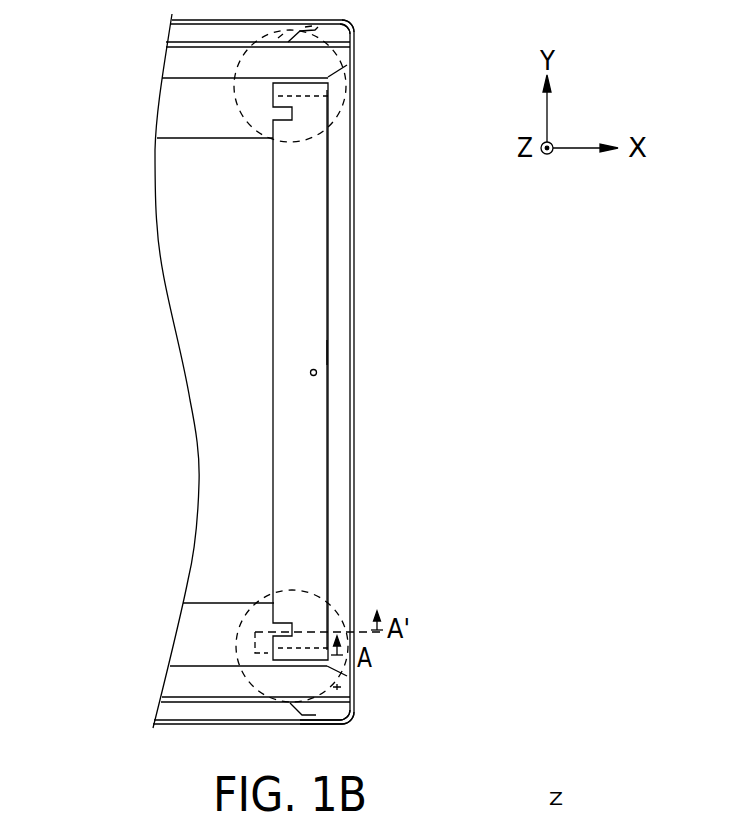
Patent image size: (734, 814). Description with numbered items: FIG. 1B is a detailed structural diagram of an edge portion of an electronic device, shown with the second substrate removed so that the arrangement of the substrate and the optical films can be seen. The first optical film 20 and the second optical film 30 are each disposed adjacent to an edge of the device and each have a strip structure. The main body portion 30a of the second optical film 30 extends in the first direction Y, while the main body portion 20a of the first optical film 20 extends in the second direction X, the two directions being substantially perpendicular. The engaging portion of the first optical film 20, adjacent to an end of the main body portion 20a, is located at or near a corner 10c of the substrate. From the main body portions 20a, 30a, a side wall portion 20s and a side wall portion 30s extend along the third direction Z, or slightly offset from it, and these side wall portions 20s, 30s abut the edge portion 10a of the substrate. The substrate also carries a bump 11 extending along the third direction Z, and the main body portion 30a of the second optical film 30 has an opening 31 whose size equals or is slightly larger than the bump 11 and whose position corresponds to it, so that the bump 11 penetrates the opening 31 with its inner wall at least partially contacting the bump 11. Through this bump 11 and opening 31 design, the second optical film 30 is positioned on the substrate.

The edge portion 10a is at (335, 710).
The corner 10c is at (337, 53).
The bump 11 is at (317, 372).
The first optical film 20 is at (203, 105).
The main body portion 20a is at (200, 651).
The side wall portion 20s is at (193, 685).
The second optical film 30 is at (307, 297).
The main body portion 30a is at (374, 371).
The side wall portion 30s is at (340, 214).
The opening 31 is at (315, 369).